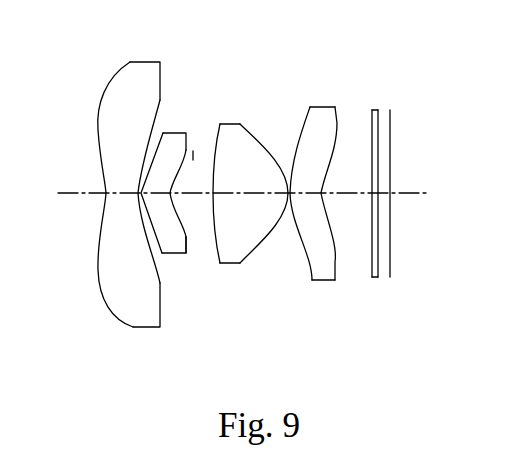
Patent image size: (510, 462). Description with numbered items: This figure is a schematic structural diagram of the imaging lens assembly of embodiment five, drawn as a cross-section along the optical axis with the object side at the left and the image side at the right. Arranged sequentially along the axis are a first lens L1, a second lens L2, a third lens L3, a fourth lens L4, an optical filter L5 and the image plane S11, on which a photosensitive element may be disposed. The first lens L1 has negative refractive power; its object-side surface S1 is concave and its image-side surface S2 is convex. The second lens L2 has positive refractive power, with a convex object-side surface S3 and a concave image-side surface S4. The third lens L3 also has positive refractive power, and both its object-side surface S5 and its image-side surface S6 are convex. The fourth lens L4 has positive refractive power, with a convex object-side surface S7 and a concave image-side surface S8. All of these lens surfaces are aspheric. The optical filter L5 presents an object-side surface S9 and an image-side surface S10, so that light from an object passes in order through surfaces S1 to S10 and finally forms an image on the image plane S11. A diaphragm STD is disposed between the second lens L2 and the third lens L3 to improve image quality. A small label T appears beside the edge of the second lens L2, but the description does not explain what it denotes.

The first lens L1 is at (104, 198).
The second lens L2 is at (162, 198).
The third lens L3 is at (236, 198).
The fourth lens L4 is at (329, 198).
The optical filter L5 is at (415, 198).
The object-side surface of the first lens S1 is at (106, 193).
The image-side surface of the first lens S2 is at (138, 193).
The object-side surface of the second lens S3 is at (141, 193).
The image-side surface of the second lens S4 is at (170, 193).
The object-side surface of the third lens S5 is at (213, 193).
The image-side surface of the third lens S6 is at (288, 193).
The object-side surface of the fourth lens S7 is at (290, 193).
The image-side surface of the fourth lens S8 is at (321, 193).
The object-side surface of the optical filter S9 is at (372, 193).
The image-side surface of the optical filter S10 is at (378, 193).
The image plane S11 is at (390, 193).
The diaphragm STD is at (193, 156).
The edge thickness marker of second lens T is at (186, 237).